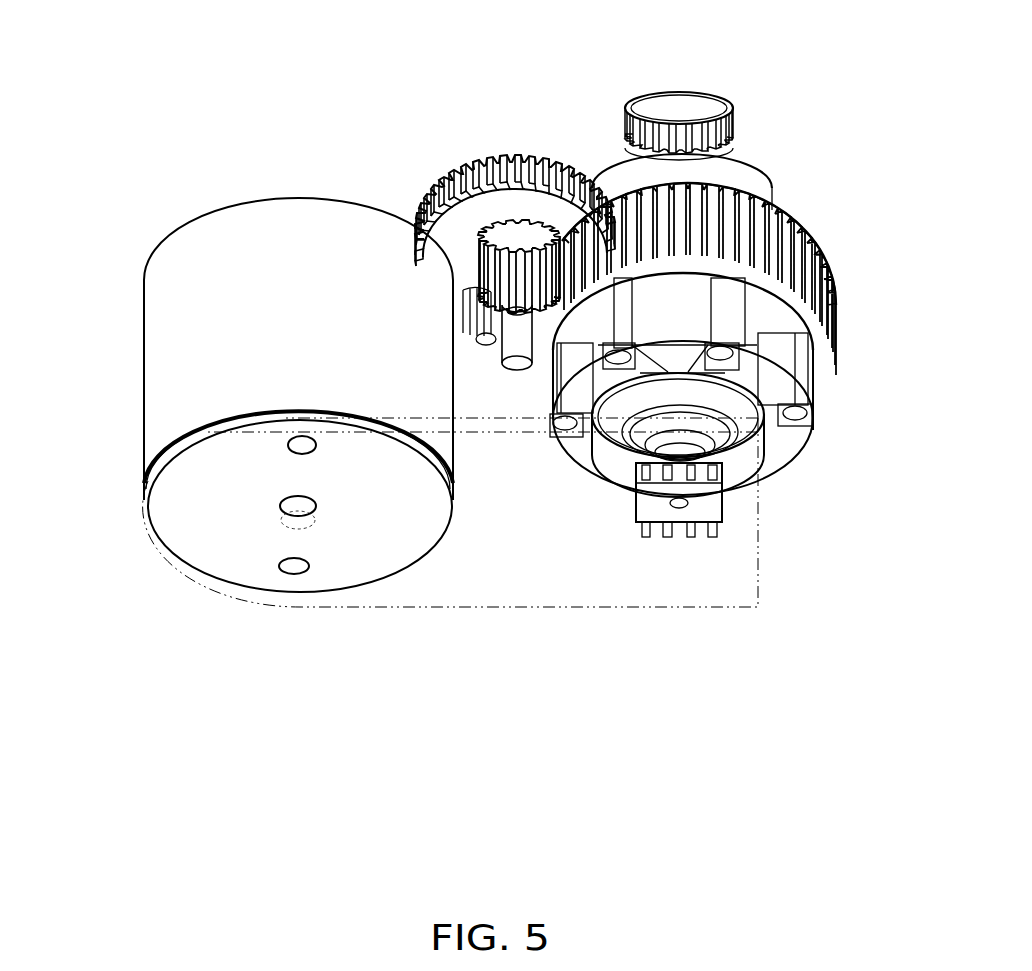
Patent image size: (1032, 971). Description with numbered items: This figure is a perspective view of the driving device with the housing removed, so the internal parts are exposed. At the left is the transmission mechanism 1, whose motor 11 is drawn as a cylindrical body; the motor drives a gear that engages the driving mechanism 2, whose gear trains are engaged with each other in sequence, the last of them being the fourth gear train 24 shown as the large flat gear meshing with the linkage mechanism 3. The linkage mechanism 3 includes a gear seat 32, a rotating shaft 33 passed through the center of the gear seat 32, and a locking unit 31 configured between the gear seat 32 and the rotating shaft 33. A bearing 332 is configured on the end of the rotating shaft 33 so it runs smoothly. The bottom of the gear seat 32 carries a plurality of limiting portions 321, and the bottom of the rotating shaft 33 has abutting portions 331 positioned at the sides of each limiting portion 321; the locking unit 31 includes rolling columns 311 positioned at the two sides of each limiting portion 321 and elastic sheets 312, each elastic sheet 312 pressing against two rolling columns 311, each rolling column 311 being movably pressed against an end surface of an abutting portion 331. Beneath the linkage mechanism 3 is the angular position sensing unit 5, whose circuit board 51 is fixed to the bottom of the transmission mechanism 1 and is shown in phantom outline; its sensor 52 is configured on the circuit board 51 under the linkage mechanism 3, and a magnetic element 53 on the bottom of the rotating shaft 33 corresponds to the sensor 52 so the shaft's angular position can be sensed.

The transmission mechanism 1 is at (248, 395).
The motor 11 is at (165, 411).
The driving mechanism 2 is at (495, 192).
The fourth gear train 24 is at (510, 140).
The linkage mechanism 3 is at (724, 262).
The rotating shaft 33 is at (680, 92).
The bearing 332 is at (745, 180).
The gear seat 32 is at (800, 240).
The locking unit 31 is at (723, 347).
The abutting portion 331 is at (715, 368).
The elastic sheet 312 is at (785, 377).
The rolling column 311 is at (803, 393).
The limiting portion 321 is at (787, 440).
The angular position sensing unit 5 is at (473, 577).
The circuit board 51 is at (611, 592).
The sensor 52 is at (703, 514).
The magnetic element 53 is at (707, 452).